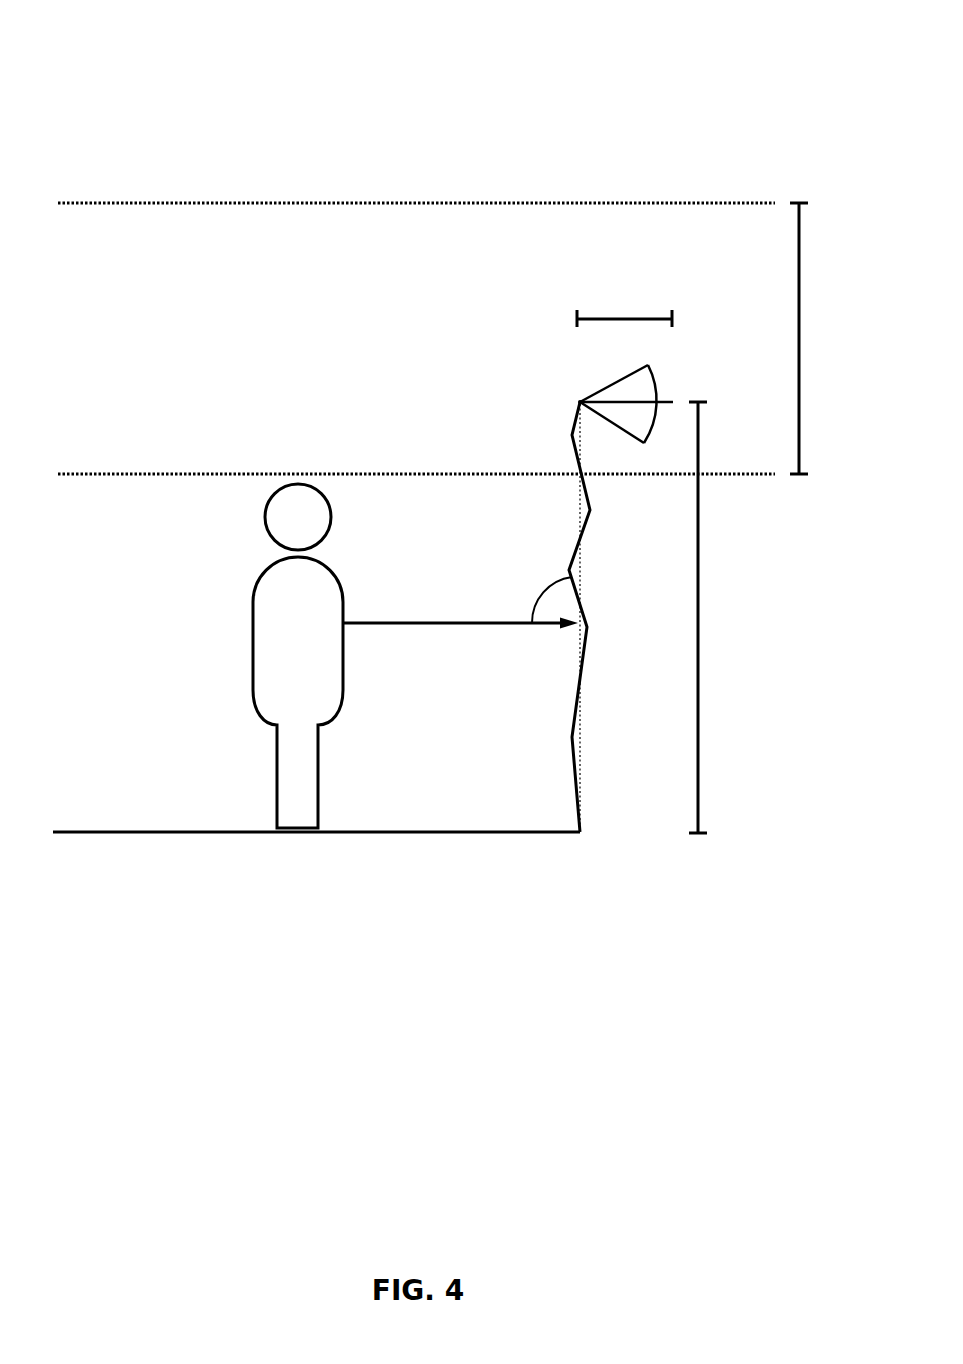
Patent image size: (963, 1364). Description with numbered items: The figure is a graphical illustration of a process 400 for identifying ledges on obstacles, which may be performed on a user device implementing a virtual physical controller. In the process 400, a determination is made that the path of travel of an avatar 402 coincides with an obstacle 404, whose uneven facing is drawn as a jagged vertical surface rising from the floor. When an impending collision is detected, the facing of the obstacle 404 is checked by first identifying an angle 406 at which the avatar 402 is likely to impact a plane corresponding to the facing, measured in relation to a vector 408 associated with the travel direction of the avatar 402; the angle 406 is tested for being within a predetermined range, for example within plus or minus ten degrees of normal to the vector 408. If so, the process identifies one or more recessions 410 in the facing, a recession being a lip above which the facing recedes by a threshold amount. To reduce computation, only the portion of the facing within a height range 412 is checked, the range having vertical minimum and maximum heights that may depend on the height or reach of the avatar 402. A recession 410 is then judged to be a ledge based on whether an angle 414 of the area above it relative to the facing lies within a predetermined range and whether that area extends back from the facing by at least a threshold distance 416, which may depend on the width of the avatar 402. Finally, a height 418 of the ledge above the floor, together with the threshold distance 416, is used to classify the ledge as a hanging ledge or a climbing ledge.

The process 400 is at (56, 38).
The avatar 402 is at (261, 656).
The obstacle 404 is at (611, 617).
The angle 406 is at (535, 594).
The vector 408 is at (460, 639).
The recession 410 is at (543, 369).
The height range 412 is at (827, 338).
The angle 414 is at (645, 399).
The threshold distance 416 is at (624, 305).
The height 418 is at (730, 617).